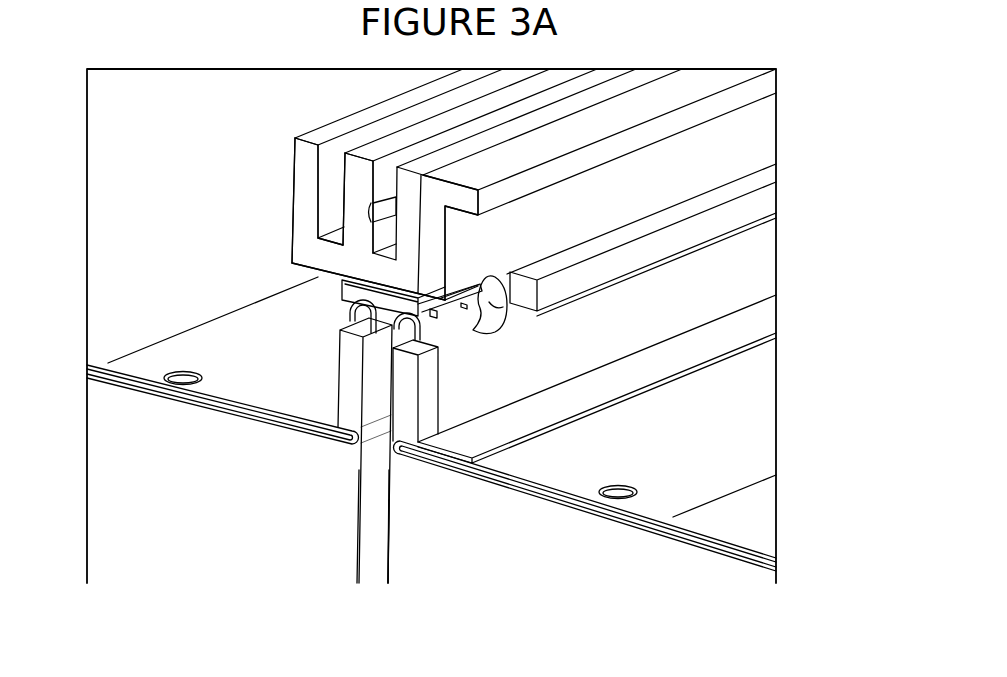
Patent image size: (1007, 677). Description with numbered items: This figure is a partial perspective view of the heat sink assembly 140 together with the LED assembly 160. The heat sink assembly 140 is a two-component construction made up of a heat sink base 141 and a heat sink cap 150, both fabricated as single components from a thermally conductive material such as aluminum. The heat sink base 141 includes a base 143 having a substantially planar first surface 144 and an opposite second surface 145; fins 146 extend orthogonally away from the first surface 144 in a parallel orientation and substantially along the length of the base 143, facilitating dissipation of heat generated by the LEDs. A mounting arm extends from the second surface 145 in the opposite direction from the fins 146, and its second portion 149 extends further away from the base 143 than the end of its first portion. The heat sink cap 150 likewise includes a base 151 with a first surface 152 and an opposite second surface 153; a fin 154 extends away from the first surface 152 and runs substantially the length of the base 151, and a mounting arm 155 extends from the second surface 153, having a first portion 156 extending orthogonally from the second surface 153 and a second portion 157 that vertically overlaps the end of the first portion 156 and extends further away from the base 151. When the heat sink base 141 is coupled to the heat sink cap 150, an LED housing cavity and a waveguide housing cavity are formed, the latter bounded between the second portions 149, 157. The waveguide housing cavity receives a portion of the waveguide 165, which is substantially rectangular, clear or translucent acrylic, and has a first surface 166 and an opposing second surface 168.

The heat sink assembly 140 is at (274, 148).
The heat sink base 141 is at (290, 208).
The base 143 is at (317, 256).
The first surface 144 is at (318, 235).
The second surface 145 is at (317, 276).
The fins 146 is at (357, 202).
The second portion 149 is at (350, 377).
The heat sink cap 150 is at (590, 373).
The base 151 is at (438, 308).
The first surface 152 is at (433, 242).
The second surface 153 is at (438, 308).
The fin 154 is at (612, 208).
The mounting arm 155 is at (495, 368).
The first portion 156 is at (505, 320).
The second portion 157 is at (435, 418).
The LED assembly 160 is at (334, 488).
The waveguide 165 is at (370, 548).
The first surface 166 is at (357, 518).
The second surface 168 is at (423, 548).